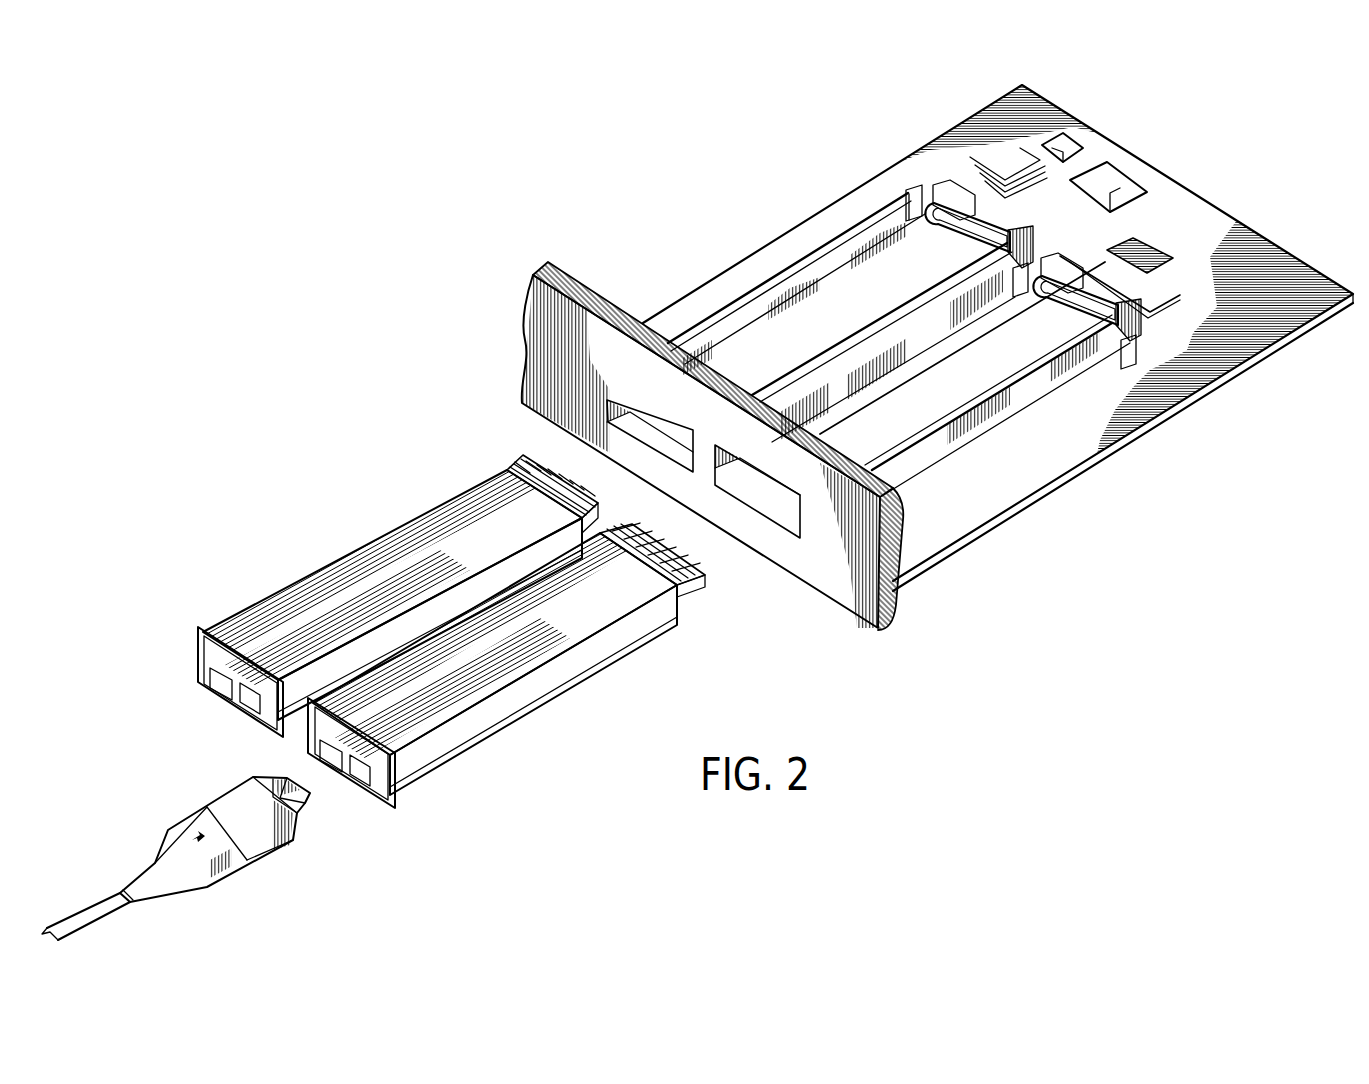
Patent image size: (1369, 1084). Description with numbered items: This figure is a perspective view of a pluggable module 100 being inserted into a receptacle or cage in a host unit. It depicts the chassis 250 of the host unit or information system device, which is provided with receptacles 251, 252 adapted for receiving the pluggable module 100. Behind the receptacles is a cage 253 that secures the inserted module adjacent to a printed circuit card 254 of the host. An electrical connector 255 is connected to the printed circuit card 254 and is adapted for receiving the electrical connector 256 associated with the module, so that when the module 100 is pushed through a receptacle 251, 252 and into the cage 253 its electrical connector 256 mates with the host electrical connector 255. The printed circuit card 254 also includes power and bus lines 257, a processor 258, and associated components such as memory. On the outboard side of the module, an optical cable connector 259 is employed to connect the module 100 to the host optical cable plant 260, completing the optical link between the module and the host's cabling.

The pluggable module 100 is at (232, 495).
The chassis 250 is at (647, 170).
The receptacle 251 is at (612, 400).
The receptacle 252 is at (782, 515).
The cage 253 is at (850, 307).
The printed circuit card 254 is at (1207, 226).
The electrical connector 255 is at (945, 195).
The electrical connector 256 is at (505, 465).
The power and bus lines 257 is at (1127, 187).
The processor 258 is at (1064, 150).
The optical cable connector 259 is at (262, 842).
The host optical cable plant 260 is at (80, 908).